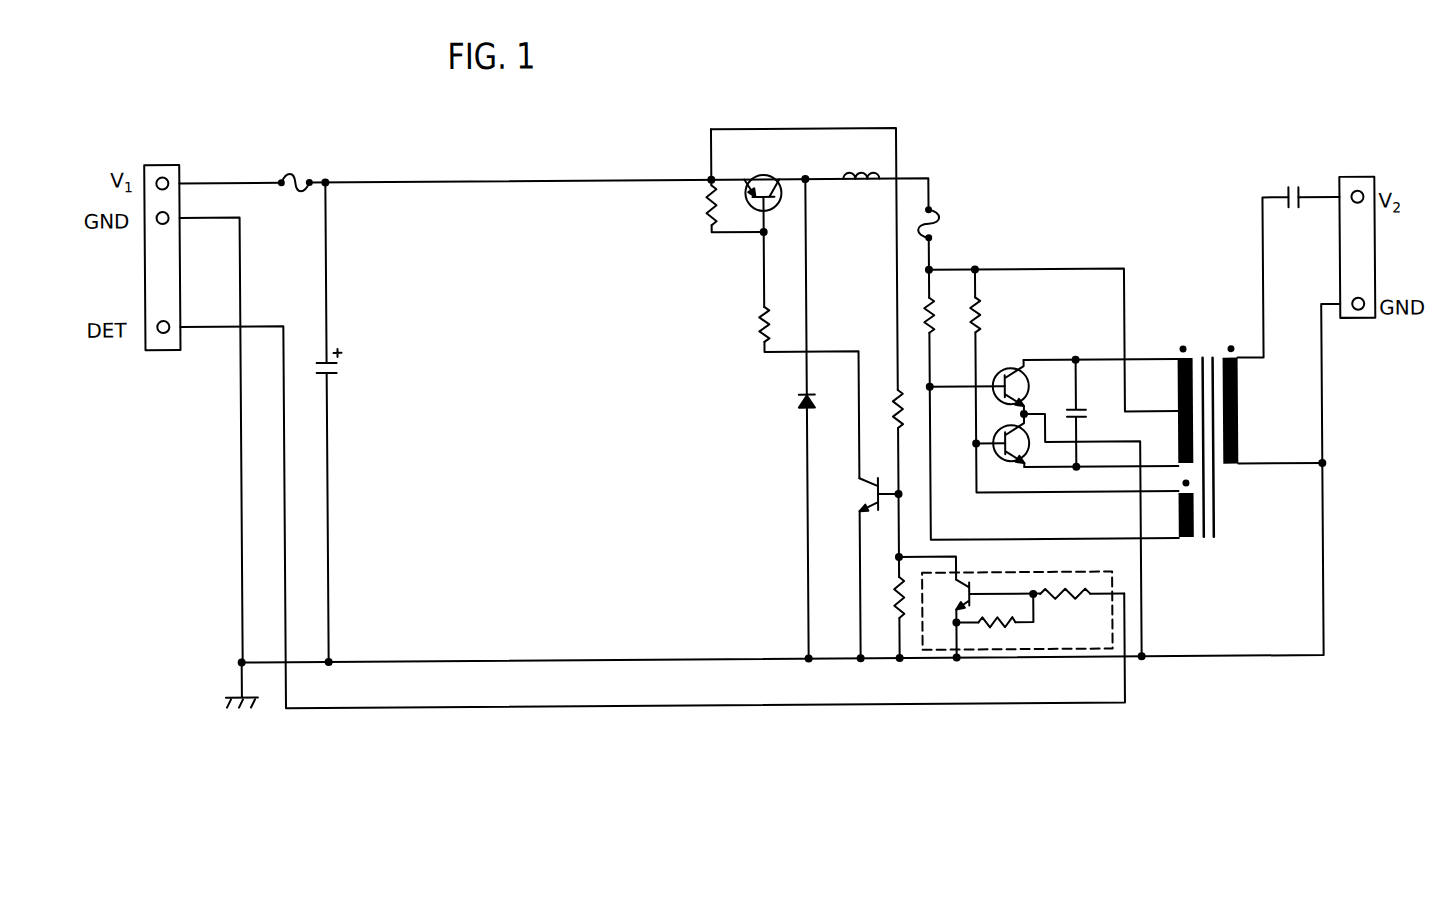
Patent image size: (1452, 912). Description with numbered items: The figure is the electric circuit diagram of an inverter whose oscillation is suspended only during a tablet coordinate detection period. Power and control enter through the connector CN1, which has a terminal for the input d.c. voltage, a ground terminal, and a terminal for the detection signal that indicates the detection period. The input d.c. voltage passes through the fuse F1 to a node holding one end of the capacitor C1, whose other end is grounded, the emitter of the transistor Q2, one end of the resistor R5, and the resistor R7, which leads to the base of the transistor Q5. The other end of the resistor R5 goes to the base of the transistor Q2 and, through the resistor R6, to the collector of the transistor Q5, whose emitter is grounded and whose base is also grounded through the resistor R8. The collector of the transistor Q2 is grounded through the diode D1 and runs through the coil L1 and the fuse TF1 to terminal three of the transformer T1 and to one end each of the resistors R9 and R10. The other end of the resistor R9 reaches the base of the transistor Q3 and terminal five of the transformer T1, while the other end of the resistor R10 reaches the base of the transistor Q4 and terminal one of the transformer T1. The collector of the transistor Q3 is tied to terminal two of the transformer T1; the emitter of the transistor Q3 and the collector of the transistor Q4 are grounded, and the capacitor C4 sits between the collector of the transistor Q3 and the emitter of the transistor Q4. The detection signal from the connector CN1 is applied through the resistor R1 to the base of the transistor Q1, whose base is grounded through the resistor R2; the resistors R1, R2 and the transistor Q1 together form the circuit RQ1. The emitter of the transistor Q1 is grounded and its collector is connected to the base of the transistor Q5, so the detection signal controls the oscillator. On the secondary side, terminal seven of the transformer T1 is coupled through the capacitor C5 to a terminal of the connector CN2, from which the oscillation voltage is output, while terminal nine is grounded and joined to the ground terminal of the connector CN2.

The connector CN1 is at (159, 240).
The fuse F1 is at (295, 170).
The capacitor C1 is at (318, 377).
The transistor Q2 is at (762, 181).
The resistor R5 is at (691, 206).
The resistor R6 is at (748, 325).
The coil L1 is at (861, 164).
The fuse TF1 is at (947, 223).
The resistor R9 is at (945, 314).
The resistor R10 is at (997, 314).
The transistor Q3 is at (1003, 381).
The transistor Q4 is at (1009, 454).
The capacitor C4 is at (1085, 413).
The diode D1 is at (819, 407).
The resistor R7 is at (884, 406).
The transistor Q5 is at (862, 568).
The resistor R8 is at (883, 597).
The circuit RQ1 is at (1017, 602).
The transistor Q1 is at (983, 618).
The resistor R1 is at (1065, 611).
The resistor R2 is at (1008, 638).
The transformer T1 is at (1208, 446).
The capacitor C5 is at (1284, 183).
The connector CN2 is at (1351, 233).